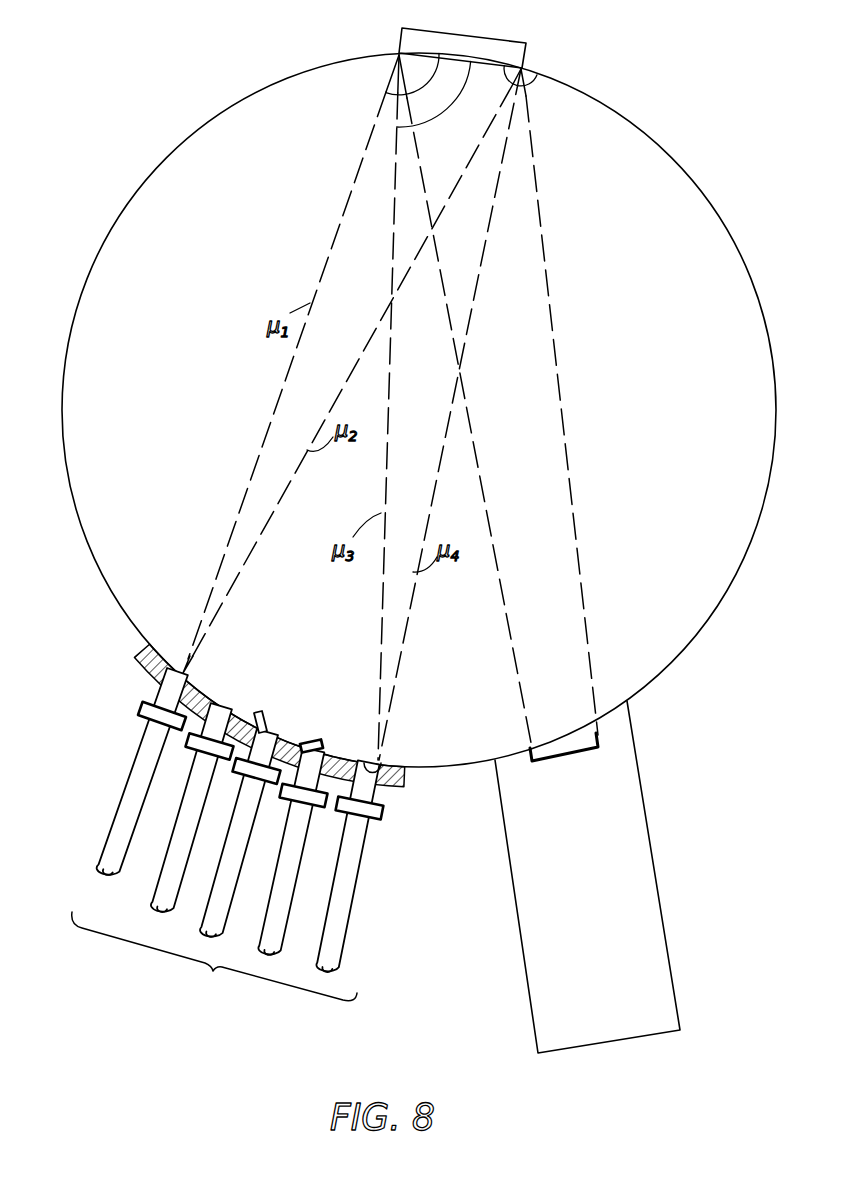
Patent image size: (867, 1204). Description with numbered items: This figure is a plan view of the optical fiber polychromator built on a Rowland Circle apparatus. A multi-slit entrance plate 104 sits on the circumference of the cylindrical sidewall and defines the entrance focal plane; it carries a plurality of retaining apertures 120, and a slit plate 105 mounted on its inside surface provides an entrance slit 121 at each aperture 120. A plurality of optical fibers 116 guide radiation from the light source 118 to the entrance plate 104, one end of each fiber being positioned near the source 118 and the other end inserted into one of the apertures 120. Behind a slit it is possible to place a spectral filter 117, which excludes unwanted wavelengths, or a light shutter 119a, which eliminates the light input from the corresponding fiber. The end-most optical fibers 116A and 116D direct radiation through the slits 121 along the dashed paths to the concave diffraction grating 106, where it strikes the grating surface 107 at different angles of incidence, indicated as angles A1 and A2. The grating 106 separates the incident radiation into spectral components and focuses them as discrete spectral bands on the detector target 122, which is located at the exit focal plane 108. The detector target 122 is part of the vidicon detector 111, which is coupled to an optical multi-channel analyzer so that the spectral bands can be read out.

The multi-slit entrance plate 104 is at (401, 786).
The slit plate 105 is at (192, 684).
The concave diffraction grating 106 is at (523, 47).
The surface of the grating 107 is at (531, 78).
The exit focal plane 108 is at (520, 750).
The vidicon detector 111 is at (672, 972).
The optical fibers 116 is at (132, 748).
The end-most optical fiber 116A is at (120, 808).
The end-most optical fiber 116D is at (357, 890).
The spectral filter 117 is at (311, 740).
The light source 118 is at (214, 965).
The light shutter 119a is at (285, 705).
The retaining apertures 120 is at (372, 758).
The entrance slit 121 is at (223, 702).
The detector target 122 is at (565, 760).
The fan angle A1 is at (420, 77).
The fan angle A2 is at (434, 98).